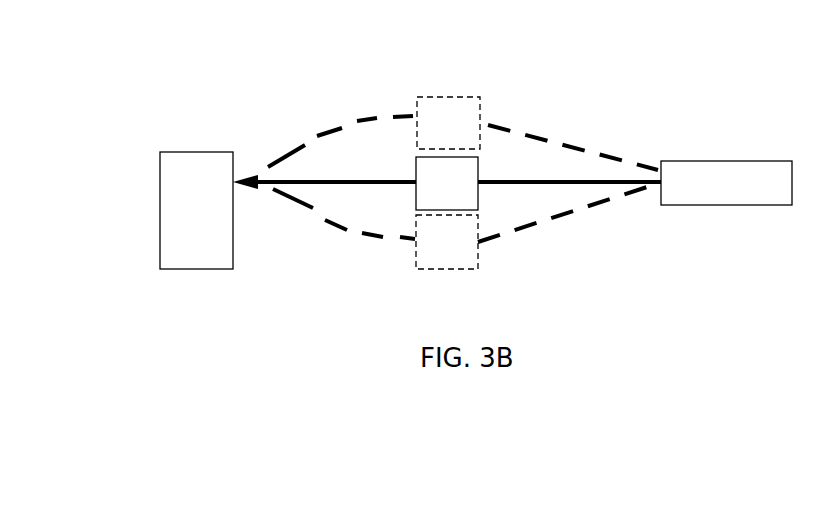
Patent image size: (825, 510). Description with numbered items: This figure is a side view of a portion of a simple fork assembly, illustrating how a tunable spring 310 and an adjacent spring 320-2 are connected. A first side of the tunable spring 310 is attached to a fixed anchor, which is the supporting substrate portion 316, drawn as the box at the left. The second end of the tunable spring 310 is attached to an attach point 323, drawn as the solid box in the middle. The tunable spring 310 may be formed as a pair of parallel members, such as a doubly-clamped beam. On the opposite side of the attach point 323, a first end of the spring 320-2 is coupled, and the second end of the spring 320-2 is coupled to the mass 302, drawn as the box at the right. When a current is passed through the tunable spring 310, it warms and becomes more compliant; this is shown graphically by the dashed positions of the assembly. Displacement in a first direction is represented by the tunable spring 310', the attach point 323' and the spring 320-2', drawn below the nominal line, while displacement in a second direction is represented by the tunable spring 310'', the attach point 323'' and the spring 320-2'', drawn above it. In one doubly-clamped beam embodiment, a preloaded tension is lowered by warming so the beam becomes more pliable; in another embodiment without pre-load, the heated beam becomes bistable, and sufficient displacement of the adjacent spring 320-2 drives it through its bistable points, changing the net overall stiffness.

The mass 302 is at (753, 192).
The supporting substrate portion 316 is at (186, 199).
The attach point 323 is at (425, 174).
The attach point 323'' is at (456, 95).
The attach point 323' is at (464, 268).
The tunable spring 310 is at (324, 142).
The tunable spring 310'' is at (340, 123).
The tunable spring 310' is at (344, 244).
The spring 320-2 is at (574, 143).
The spring 320-2'' is at (573, 122).
The spring 320-2' is at (564, 241).